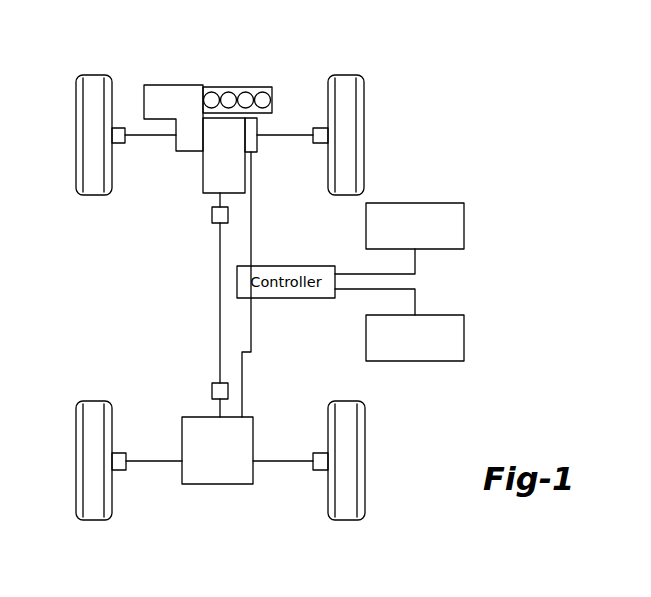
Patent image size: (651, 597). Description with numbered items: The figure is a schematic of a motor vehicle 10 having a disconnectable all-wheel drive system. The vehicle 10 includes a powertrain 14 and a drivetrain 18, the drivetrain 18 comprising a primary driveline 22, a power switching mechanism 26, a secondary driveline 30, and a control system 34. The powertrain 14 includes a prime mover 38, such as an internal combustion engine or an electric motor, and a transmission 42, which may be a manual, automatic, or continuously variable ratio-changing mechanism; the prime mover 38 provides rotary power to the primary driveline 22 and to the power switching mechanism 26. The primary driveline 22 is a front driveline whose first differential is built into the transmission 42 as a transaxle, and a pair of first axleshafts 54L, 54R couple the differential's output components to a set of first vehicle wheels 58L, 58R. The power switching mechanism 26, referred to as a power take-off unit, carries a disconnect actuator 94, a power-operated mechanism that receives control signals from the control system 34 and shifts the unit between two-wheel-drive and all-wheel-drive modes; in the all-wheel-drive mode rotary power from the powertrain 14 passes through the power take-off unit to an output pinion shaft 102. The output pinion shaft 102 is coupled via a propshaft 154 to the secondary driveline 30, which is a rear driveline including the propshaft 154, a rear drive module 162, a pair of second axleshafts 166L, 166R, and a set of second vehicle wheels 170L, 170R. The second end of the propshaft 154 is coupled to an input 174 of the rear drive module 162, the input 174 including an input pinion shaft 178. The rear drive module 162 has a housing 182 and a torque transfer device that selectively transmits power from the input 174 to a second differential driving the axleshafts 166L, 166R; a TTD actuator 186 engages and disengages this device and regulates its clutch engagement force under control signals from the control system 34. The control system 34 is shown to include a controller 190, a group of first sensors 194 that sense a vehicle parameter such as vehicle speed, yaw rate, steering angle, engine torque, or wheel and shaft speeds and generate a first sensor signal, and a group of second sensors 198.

The motor vehicle 10 is at (78, 242).
The powertrain 14 is at (220, 85).
The drivetrain 18 is at (93, 346).
The primary driveline 22 is at (172, 145).
The power switching mechanism 26 is at (198, 181).
The secondary driveline 30 is at (186, 510).
The control system 34 is at (290, 233).
The prime mover 38 is at (257, 87).
The transmission 42 is at (175, 85).
The first axleshaft 54L is at (139, 135).
The first axleshaft 54R is at (291, 135).
The first vehicle wheel 58L is at (95, 75).
The first vehicle wheel 58R is at (348, 75).
The disconnect actuator 94 is at (257, 147).
The output pinion shaft 102 is at (212, 206).
The propshaft 154 is at (220, 303).
The rear drive module 162 is at (232, 487).
The second axleshaft 166L is at (153, 463).
The second axleshaft 166R is at (281, 463).
The second vehicle wheel 170L is at (93, 521).
The second vehicle wheel 170R is at (347, 521).
The input 174 is at (216, 412).
The input pinion shaft 178 is at (217, 402).
The housing 182 is at (212, 485).
The TTD actuator 186 is at (250, 412).
The controller 190 is at (287, 298).
The first sensors 194 is at (464, 337).
The second sensors 198 is at (464, 225).